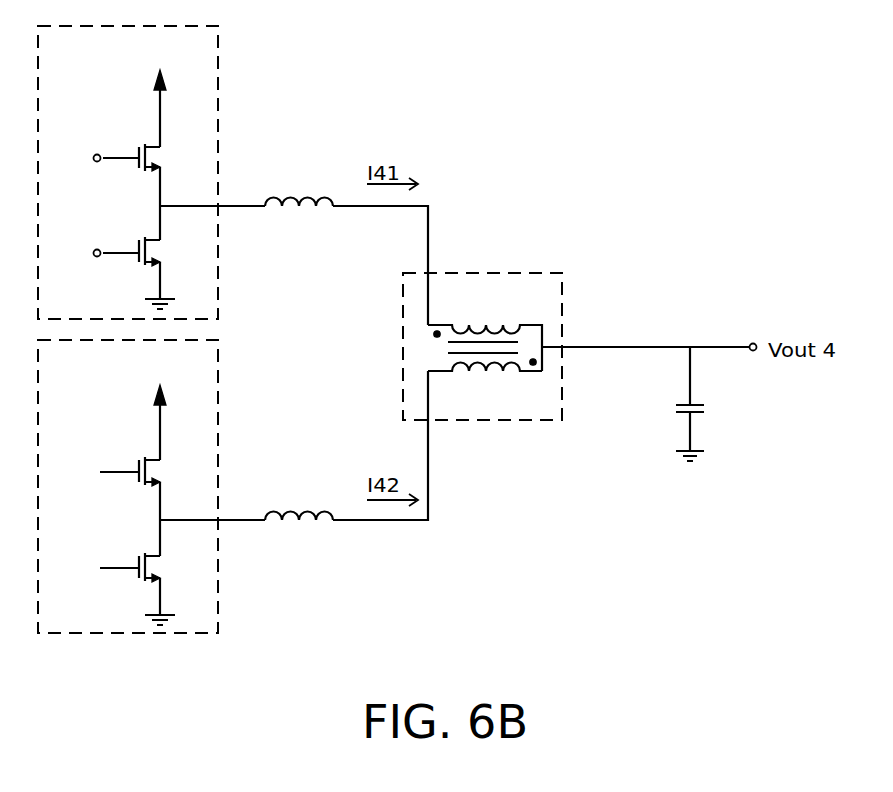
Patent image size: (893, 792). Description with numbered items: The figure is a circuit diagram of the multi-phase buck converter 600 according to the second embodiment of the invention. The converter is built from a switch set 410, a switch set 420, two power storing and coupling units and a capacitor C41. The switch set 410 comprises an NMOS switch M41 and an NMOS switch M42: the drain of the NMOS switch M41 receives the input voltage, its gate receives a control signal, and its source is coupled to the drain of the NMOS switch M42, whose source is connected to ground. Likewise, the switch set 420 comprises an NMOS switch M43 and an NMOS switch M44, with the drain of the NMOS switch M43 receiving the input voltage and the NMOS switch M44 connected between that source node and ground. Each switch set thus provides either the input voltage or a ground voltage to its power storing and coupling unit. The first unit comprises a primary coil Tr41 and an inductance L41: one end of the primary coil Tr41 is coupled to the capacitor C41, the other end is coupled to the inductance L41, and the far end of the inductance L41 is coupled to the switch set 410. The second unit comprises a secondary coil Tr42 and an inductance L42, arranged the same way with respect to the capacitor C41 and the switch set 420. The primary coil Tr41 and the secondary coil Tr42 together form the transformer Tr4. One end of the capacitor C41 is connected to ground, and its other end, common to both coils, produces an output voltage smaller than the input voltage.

The switch set 410 is at (218, 85).
The switch set 420 is at (218, 575).
The multi-phase buck converter 600 is at (606, 640).
The transformer Tr4 is at (562, 308).
The primary coil Tr41 is at (485, 332).
The secondary coil Tr42 is at (485, 382).
The inductance L41 is at (333, 189).
The inductance L42 is at (333, 503).
The capacitor C41 is at (711, 404).
The NMOS switch M41 is at (127, 157).
The NMOS switch M42 is at (127, 251).
The NMOS switch M43 is at (127, 471).
The NMOS switch M44 is at (127, 567).